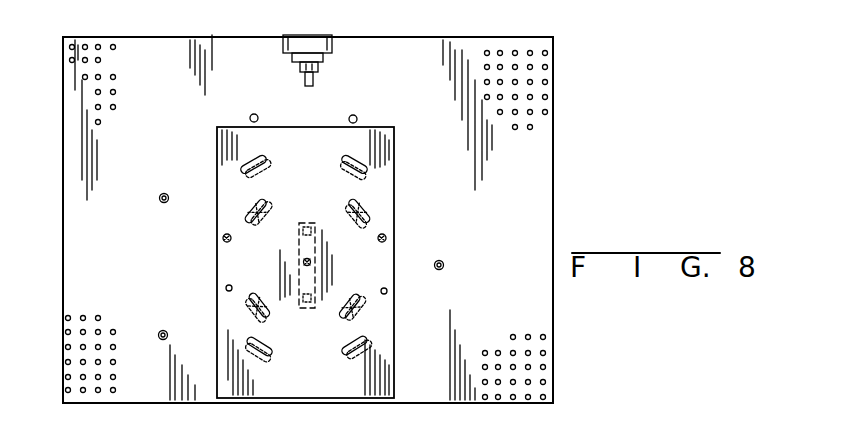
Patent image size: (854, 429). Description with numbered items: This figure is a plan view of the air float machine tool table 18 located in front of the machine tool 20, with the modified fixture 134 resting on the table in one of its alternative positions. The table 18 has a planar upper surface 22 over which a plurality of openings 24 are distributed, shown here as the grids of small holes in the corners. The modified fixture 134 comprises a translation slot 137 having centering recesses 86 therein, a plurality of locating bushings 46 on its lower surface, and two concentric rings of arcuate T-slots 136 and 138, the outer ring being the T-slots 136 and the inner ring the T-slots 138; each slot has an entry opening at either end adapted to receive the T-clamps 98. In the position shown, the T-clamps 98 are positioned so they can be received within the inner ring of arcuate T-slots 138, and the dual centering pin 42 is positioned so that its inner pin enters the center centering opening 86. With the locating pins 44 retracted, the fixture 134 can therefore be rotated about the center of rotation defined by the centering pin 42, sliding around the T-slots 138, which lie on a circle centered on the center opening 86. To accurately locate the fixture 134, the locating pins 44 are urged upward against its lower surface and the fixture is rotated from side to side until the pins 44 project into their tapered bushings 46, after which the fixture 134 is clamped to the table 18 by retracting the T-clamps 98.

The air float machine tool table 18 is at (553, 147).
The machine tool 20 is at (283, 45).
The planar upper surface 22 is at (537, 137).
The openings 24 is at (536, 80).
The dual centering pin 42 is at (314, 267).
The locating pins 44 is at (164, 193).
The locating bushings 46 is at (226, 286).
The centering recesses 86 is at (306, 222).
The T-clamps 98 is at (254, 114).
The modified fixture 134 is at (398, 138).
The arcuate T-slots (outer ring) 136 is at (357, 160).
The translation slot 137 is at (301, 246).
The arcuate T-slots (inner ring) 138 is at (265, 204).